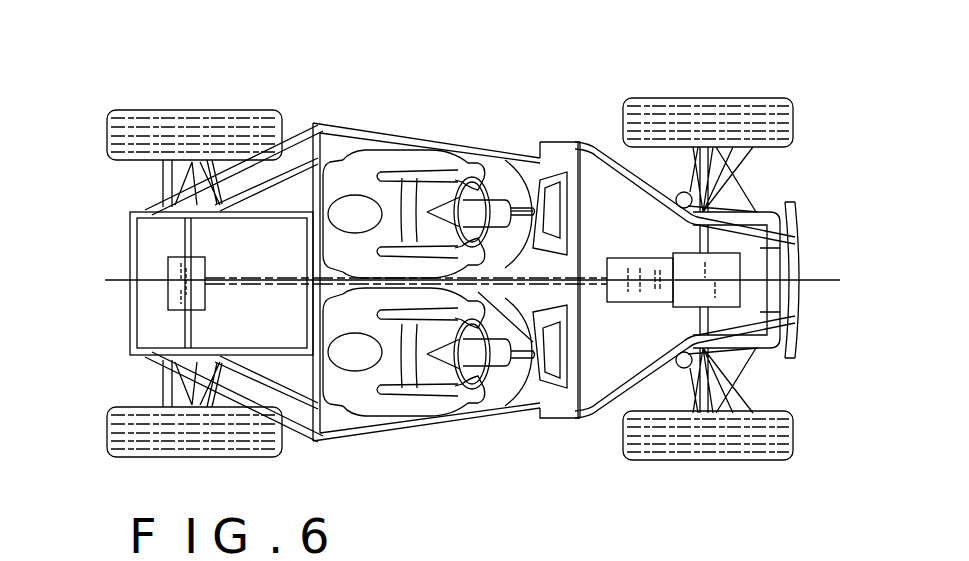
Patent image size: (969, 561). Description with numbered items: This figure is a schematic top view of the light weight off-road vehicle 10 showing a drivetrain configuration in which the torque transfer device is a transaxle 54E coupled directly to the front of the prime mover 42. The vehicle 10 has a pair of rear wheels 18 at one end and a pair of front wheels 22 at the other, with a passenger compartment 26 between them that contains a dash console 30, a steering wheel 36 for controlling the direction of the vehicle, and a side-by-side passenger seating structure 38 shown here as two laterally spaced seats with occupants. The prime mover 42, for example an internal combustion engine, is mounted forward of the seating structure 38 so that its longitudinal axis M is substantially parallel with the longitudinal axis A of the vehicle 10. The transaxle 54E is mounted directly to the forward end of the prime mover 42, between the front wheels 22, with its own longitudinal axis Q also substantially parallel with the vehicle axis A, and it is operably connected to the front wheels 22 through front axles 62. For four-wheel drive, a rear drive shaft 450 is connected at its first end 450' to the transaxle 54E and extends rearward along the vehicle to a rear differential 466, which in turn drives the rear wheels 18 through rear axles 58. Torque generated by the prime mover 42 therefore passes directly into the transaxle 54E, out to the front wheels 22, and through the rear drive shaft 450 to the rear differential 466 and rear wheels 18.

The off-road vehicle 10 is at (465, 57).
The rear wheels 18 is at (180, 130).
The front wheels 22 is at (693, 117).
The passenger compartment 26 is at (447, 445).
The dash console 30 is at (573, 147).
The steering wheel 36 is at (493, 190).
The passenger seating structure 38 is at (340, 170).
The prime mover 42 is at (637, 267).
The transaxle 54E is at (730, 267).
The rear axle 58 is at (187, 188).
The front axle 62 is at (706, 200).
The rear drive shaft 450 is at (550, 402).
The first end of rear drive shaft 450' is at (624, 325).
The rear differential 466 is at (178, 300).
The longitudinal axis of the vehicle A is at (475, 282).
The longitudinal axis of the prime mover M is at (670, 280).
The longitudinal axis of the transaxle Q is at (780, 316).